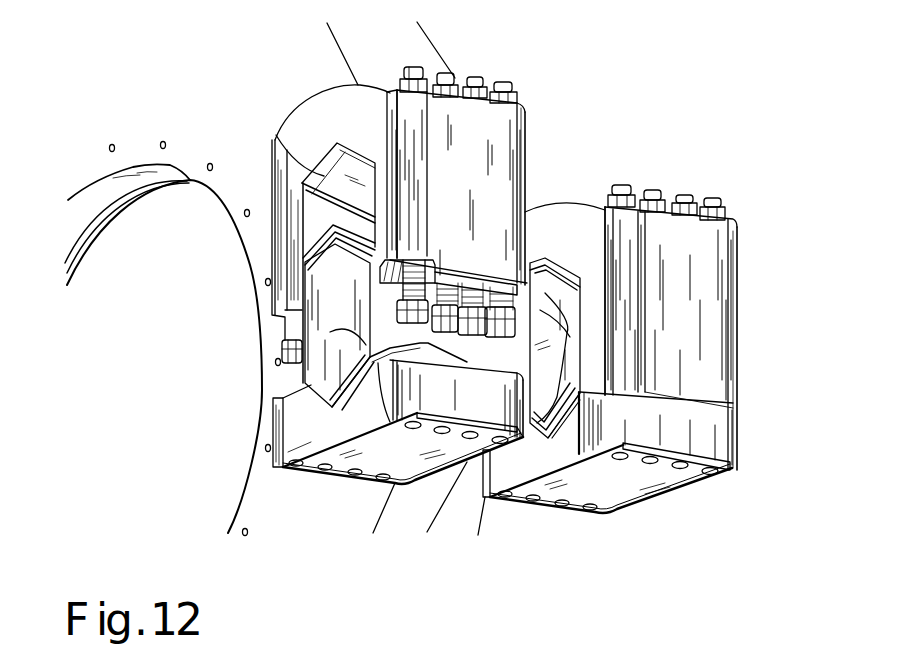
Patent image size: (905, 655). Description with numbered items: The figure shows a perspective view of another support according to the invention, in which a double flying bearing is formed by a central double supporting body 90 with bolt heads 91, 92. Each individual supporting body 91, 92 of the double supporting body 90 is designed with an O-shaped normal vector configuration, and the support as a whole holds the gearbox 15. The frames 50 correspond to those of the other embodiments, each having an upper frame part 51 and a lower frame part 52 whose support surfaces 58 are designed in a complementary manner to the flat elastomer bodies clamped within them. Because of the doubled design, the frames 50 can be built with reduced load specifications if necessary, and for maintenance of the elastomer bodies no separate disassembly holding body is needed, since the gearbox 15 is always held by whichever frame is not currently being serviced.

The gearbox 15 is at (100, 185).
The frames 50 is at (536, 93).
The upper frame part 51 is at (527, 137).
The lower frame part 52 is at (380, 450).
The support surfaces 58 is at (276, 142).
The central double supporting body 90 is at (578, 393).
The bolt heads (individual supporting body) 91 is at (345, 333).
The bolt heads (individual supporting body) 92 is at (545, 265).